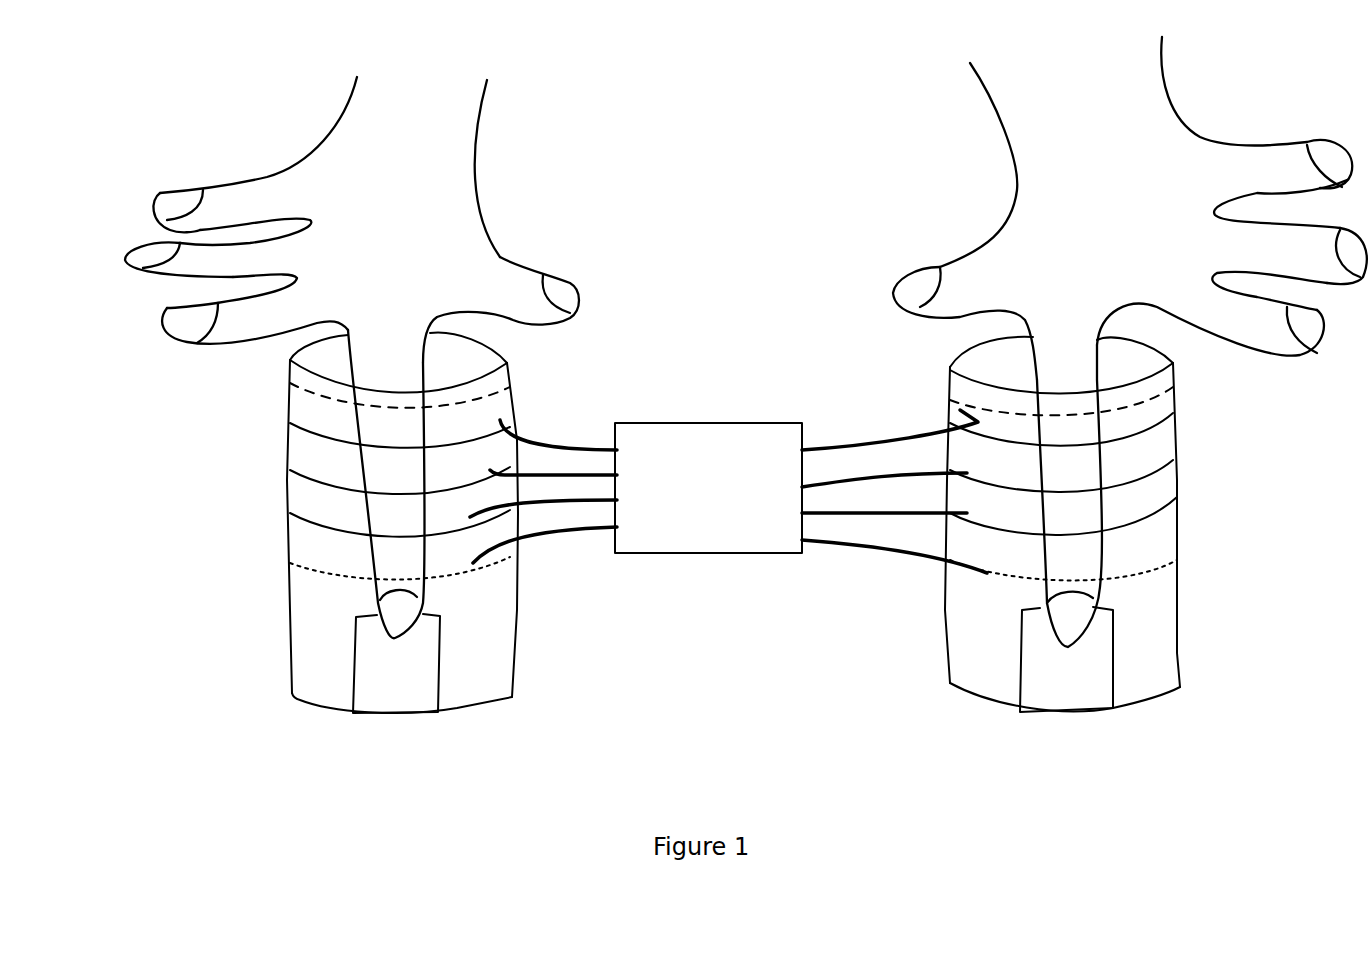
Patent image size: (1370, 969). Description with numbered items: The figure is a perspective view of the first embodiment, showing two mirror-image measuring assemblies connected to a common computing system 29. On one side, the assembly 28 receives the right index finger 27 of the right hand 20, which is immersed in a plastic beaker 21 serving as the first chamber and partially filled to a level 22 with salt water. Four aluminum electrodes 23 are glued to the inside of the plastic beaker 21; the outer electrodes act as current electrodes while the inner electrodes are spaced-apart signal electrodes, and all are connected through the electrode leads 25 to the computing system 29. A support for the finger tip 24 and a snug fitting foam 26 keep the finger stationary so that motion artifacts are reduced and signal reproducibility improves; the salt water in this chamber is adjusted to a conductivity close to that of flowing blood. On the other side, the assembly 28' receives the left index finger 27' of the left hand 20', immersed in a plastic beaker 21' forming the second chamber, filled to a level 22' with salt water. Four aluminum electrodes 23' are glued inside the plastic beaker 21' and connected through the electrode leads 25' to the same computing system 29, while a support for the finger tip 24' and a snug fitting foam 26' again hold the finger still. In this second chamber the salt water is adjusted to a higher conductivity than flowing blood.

The right hand 20 is at (398, 220).
The left hand 20' is at (1070, 208).
The plastic beaker 21 is at (305, 560).
The plastic beaker 21' is at (1132, 562).
The level 22 is at (457, 376).
The level 22' is at (975, 374).
The aluminum electrodes 23 is at (425, 668).
The aluminum electrodes 23' is at (1012, 655).
The support for the finger tip 24 is at (396, 701).
The support for the finger tip 24' is at (1066, 699).
The electrode leads 25 is at (549, 544).
The electrode leads 25' is at (892, 533).
The snug fitting foam 26 is at (485, 409).
The snug fitting foam 26' is at (935, 416).
The right index finger 27 is at (443, 683).
The left index finger 27' is at (1016, 677).
The assembly 28 is at (355, 741).
The assembly 28' is at (1082, 736).
The computing system 29 is at (714, 525).